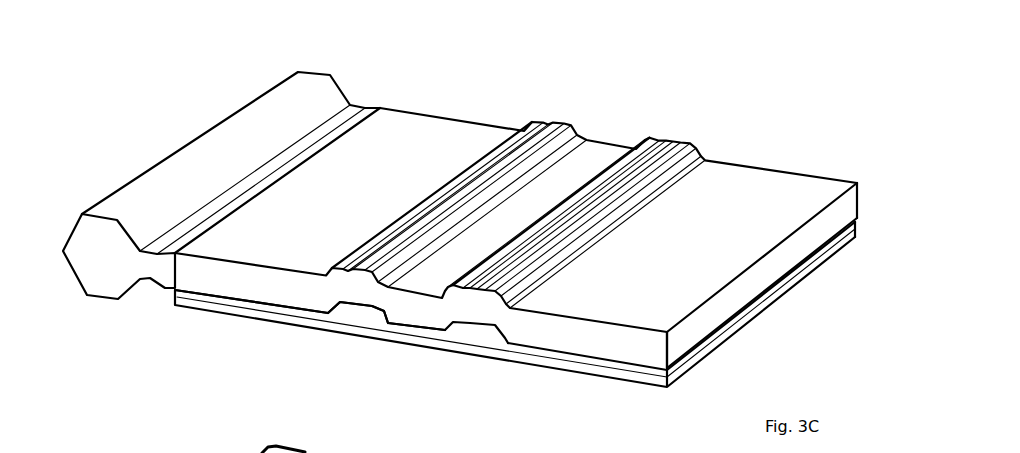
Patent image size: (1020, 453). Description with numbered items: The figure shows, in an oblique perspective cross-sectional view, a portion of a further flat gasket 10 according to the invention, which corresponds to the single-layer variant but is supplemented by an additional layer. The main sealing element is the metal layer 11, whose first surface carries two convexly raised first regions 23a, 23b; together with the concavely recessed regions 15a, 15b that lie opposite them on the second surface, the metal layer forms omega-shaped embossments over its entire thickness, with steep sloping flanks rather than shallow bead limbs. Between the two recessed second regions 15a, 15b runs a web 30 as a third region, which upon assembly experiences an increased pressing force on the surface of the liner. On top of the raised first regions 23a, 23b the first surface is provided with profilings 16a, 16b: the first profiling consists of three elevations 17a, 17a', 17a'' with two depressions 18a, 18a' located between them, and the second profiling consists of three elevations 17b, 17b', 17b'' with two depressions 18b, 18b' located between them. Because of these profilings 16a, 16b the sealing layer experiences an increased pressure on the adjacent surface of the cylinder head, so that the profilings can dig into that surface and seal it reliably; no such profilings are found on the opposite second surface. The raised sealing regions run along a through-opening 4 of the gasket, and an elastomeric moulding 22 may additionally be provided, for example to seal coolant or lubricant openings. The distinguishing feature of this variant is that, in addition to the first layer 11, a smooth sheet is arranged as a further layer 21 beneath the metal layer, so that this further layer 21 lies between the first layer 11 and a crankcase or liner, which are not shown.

The through-opening 4 is at (820, 344).
The flat gasket 10 is at (862, 167).
The metal layer 11 is at (793, 187).
The further layer 21 is at (545, 362).
The web 30 is at (432, 323).
The moulding 22 is at (323, 92).
The concavely recessed region 15a is at (357, 318).
The concavely recessed region 15b is at (472, 335).
The profiling 16a is at (540, 121).
The profiling 16b is at (647, 137).
The elevation 17a is at (471, 198).
The elevation 17a' is at (487, 189).
The elevation 17a'' is at (543, 213).
The elevation 17b is at (592, 192).
The elevation 17b' is at (598, 222).
The elevation 17b'' is at (610, 230).
The depression 18a is at (477, 208).
The depression 18a' is at (373, 340).
The depression 18b is at (607, 234).
The depression 18b' is at (524, 295).
The raised first region 23a is at (571, 123).
The raised first region 23b is at (685, 143).